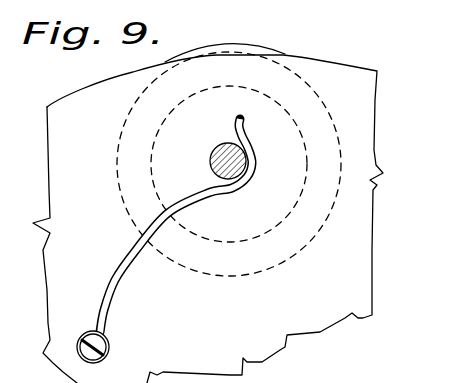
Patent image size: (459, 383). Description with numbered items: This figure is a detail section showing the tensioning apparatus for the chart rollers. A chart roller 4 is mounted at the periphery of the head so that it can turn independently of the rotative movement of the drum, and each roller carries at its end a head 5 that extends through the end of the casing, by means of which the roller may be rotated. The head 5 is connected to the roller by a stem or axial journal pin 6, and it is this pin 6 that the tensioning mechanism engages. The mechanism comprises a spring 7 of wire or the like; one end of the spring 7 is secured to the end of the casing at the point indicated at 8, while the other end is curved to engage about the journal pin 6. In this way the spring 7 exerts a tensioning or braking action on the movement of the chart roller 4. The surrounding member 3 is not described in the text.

The plate 3 is at (358, 53).
The chart roller 4 is at (252, 32).
The head 5 is at (150, 160).
The axial journal pin 6 is at (213, 155).
The spring 7 is at (192, 204).
The securing point of spring 8 is at (107, 340).